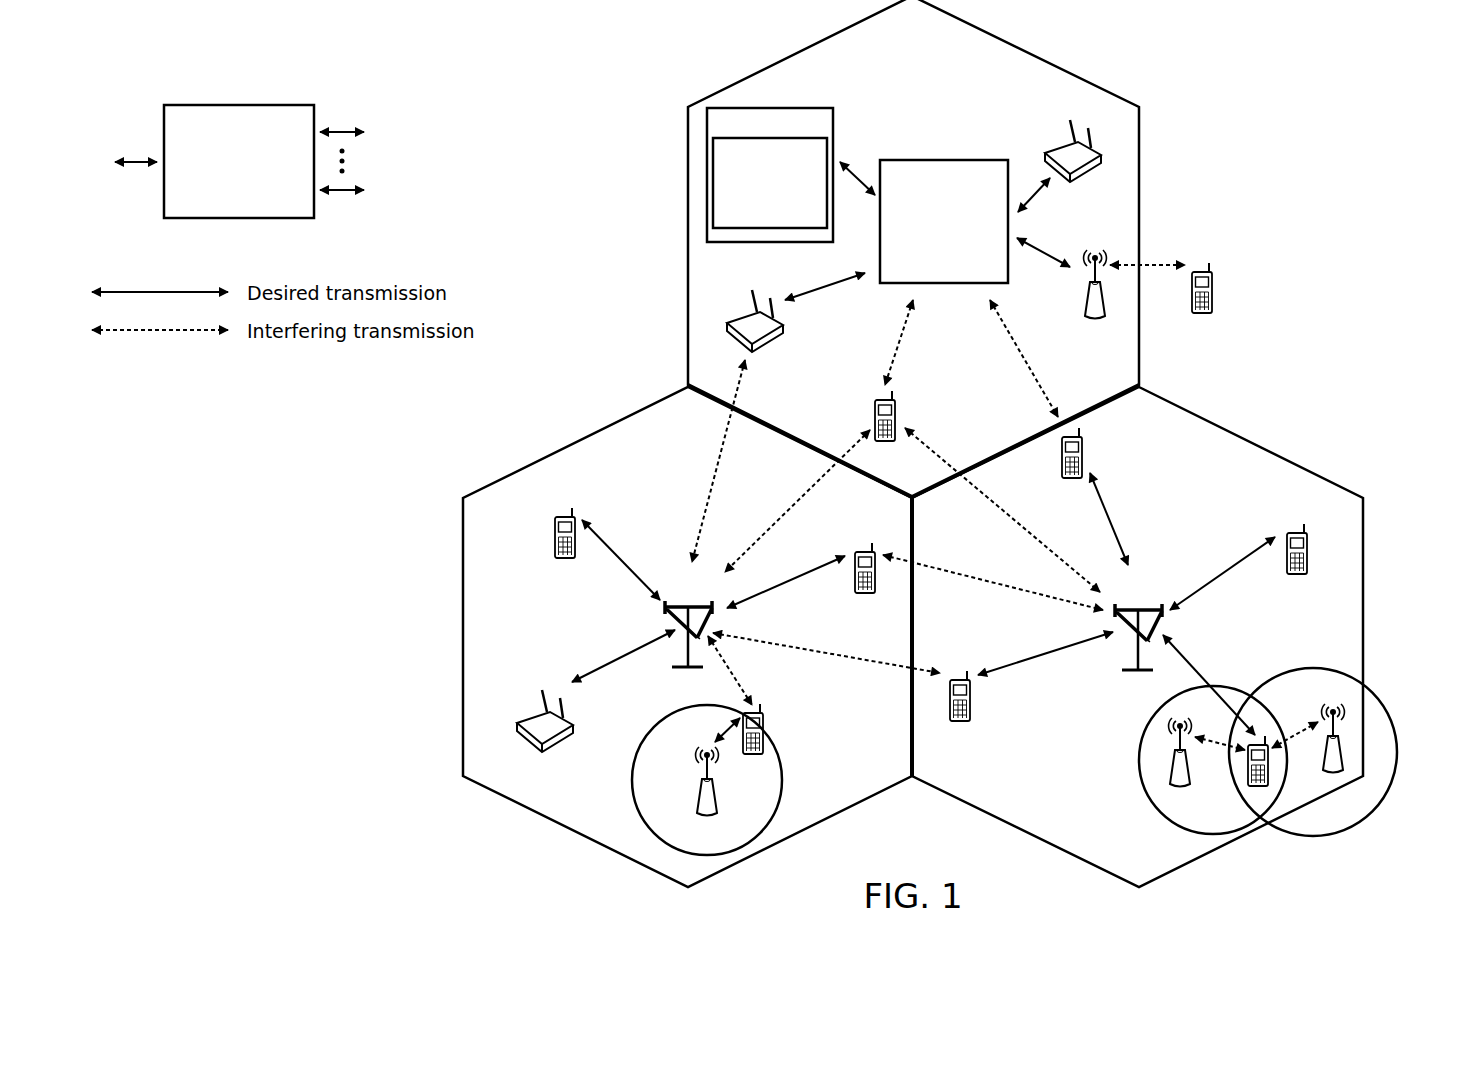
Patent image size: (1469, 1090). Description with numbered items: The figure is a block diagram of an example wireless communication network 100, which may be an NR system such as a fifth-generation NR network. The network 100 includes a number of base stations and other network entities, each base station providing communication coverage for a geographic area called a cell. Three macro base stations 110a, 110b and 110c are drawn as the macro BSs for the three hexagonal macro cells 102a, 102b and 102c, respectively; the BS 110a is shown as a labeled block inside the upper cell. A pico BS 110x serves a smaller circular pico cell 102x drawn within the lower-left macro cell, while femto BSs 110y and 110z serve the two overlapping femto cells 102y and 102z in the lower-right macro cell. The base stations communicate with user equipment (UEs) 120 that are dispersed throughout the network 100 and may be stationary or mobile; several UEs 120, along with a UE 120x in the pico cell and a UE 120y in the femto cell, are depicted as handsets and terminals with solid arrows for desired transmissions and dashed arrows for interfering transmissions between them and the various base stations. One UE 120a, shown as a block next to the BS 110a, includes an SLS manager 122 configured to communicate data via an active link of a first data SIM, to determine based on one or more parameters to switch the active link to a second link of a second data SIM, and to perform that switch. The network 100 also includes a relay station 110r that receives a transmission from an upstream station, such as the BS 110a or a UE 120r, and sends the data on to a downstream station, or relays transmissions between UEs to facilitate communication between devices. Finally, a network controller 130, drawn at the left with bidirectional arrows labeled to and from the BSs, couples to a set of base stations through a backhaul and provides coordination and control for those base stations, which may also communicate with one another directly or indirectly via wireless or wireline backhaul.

The wireless communication network 100 is at (1292, 64).
The macro cell 102a is at (1028, 50).
The macro cell 102b is at (576, 442).
The macro cell 102c is at (1253, 450).
The pico cell 102x is at (652, 726).
The femto cell 102y is at (1146, 722).
The femto cell 102z is at (1306, 670).
The macro base station 110a is at (980, 160).
The macro base station 110b is at (690, 604).
The macro base station 110c is at (1140, 606).
The relay station 110r is at (1086, 310).
The pico base station 110x is at (716, 806).
The femto base station 110y is at (1190, 782).
The femto base station 110z is at (1343, 768).
The user equipment 120 is at (1078, 142).
The user equipment 120a is at (756, 133).
The user equipment 120r is at (1213, 300).
The user equipment 120x is at (762, 720).
The user equipment 120y is at (1247, 785).
The SLS manager 122 is at (745, 138).
The network controller 130 is at (240, 104).